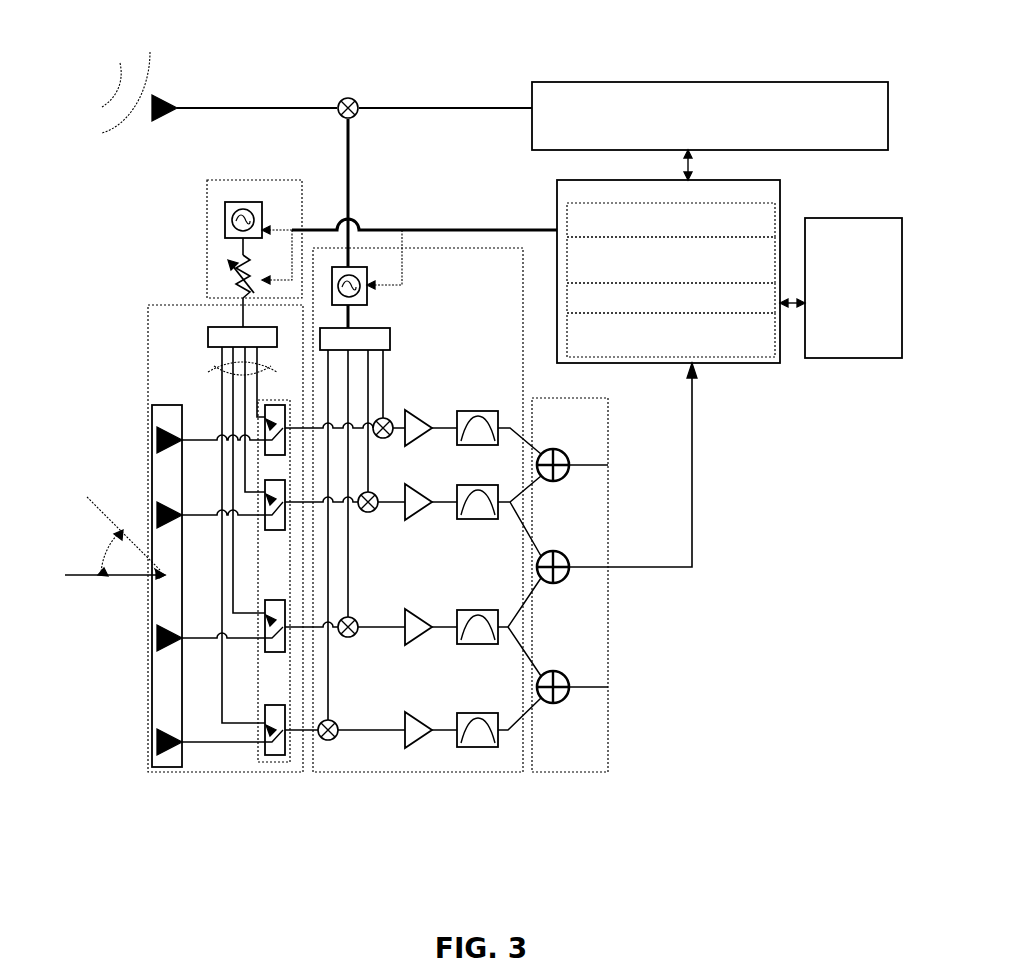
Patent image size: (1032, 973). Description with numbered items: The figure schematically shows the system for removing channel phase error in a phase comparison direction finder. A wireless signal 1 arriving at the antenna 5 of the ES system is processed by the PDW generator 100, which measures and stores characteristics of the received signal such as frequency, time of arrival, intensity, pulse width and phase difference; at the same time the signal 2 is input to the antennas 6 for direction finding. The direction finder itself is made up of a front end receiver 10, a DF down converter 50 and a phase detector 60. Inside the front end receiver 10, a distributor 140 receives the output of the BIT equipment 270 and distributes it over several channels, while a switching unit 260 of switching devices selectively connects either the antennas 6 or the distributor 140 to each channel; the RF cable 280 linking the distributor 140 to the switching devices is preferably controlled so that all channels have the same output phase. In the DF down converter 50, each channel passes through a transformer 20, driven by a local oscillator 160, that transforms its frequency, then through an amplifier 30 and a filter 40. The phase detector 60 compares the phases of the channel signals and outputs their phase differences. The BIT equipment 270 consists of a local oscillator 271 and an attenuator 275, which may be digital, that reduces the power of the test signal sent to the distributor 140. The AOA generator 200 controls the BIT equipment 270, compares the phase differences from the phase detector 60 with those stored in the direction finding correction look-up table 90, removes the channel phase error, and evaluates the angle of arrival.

The wireless signal 1 is at (100, 52).
The signal 2 is at (88, 465).
The antenna 5 is at (167, 100).
The antennas for direction finding 6 is at (148, 773).
The front end receiver 10 is at (195, 775).
The transformer 20 is at (330, 745).
The amplifier 30 is at (415, 750).
The filter 40 is at (488, 753).
The DF down converter 50 is at (437, 773).
The phase detector 60 is at (550, 773).
The direction finding correction look-up table 90 is at (850, 358).
The PDW generator 100 is at (700, 82).
The distributor 140 is at (207, 332).
The local oscillator 160 is at (367, 300).
The AOA generator 200 is at (733, 363).
The switching unit 260 is at (275, 765).
The BIT equipment 270 is at (215, 214).
The local oscillator 271 is at (243, 202).
The attenuator 275 is at (228, 280).
The RF cable 280 is at (208, 368).